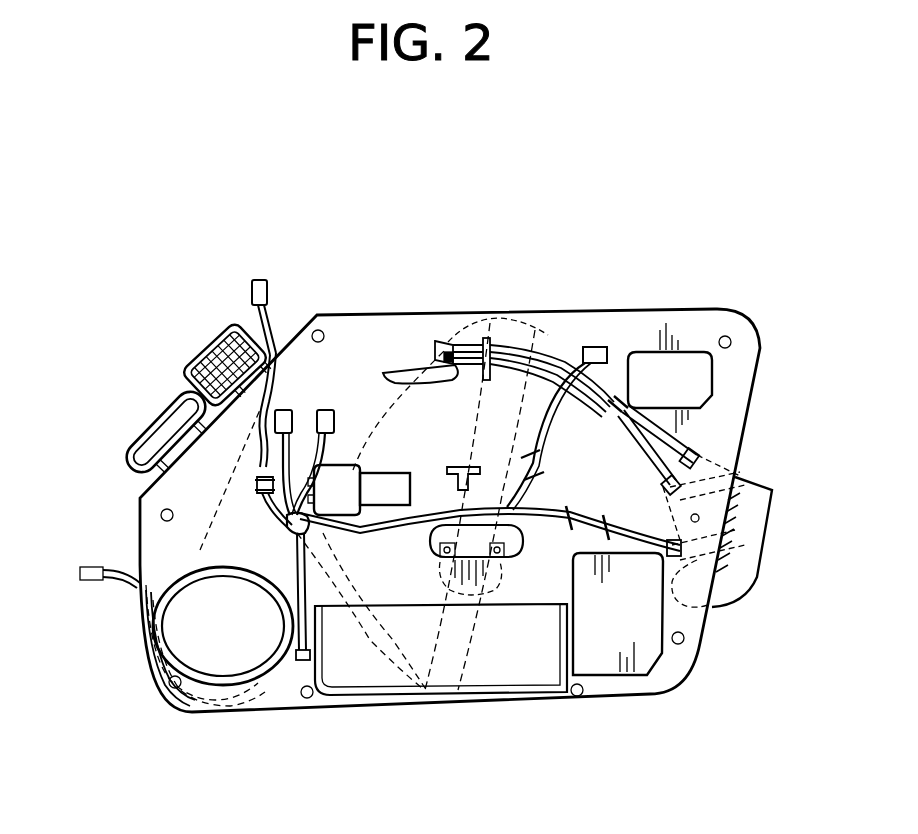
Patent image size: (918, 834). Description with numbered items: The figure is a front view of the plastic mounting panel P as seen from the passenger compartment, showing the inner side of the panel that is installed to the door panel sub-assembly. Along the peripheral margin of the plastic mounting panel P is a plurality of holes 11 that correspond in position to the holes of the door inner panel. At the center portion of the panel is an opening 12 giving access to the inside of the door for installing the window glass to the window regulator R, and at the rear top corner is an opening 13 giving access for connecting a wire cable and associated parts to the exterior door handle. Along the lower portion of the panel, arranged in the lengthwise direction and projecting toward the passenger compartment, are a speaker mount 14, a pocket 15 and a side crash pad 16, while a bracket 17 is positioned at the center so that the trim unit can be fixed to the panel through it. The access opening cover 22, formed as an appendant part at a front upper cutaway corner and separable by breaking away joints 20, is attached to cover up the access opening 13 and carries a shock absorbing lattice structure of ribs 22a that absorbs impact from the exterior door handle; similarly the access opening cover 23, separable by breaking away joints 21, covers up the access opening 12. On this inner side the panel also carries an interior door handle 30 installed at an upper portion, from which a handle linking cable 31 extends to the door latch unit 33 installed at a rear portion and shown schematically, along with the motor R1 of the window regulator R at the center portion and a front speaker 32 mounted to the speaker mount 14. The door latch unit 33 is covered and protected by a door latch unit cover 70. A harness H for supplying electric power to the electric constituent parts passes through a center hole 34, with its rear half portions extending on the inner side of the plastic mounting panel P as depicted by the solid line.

The plastic mounting panel P is at (613, 307).
The holes 11 is at (318, 329).
The opening 12 is at (520, 565).
The opening 13 is at (690, 352).
The speaker mount 14 is at (253, 683).
The pocket 15 is at (380, 700).
The side crash pad 16 is at (643, 677).
The bracket 17 is at (447, 467).
The joints 20 is at (200, 393).
The joints 21 is at (160, 483).
The access opening cover 22 is at (207, 337).
The ribs 22a is at (232, 328).
The access opening cover 23 is at (153, 433).
The interior door handle 30 is at (447, 333).
The handle linking cable 31 is at (546, 352).
The front speaker 32 is at (217, 667).
The door latch unit 33 is at (750, 570).
The center hole 34 is at (283, 528).
The door latch unit cover 70 is at (740, 472).
The harness H is at (352, 545).
The window regulator R is at (550, 313).
The motor R1 is at (382, 473).